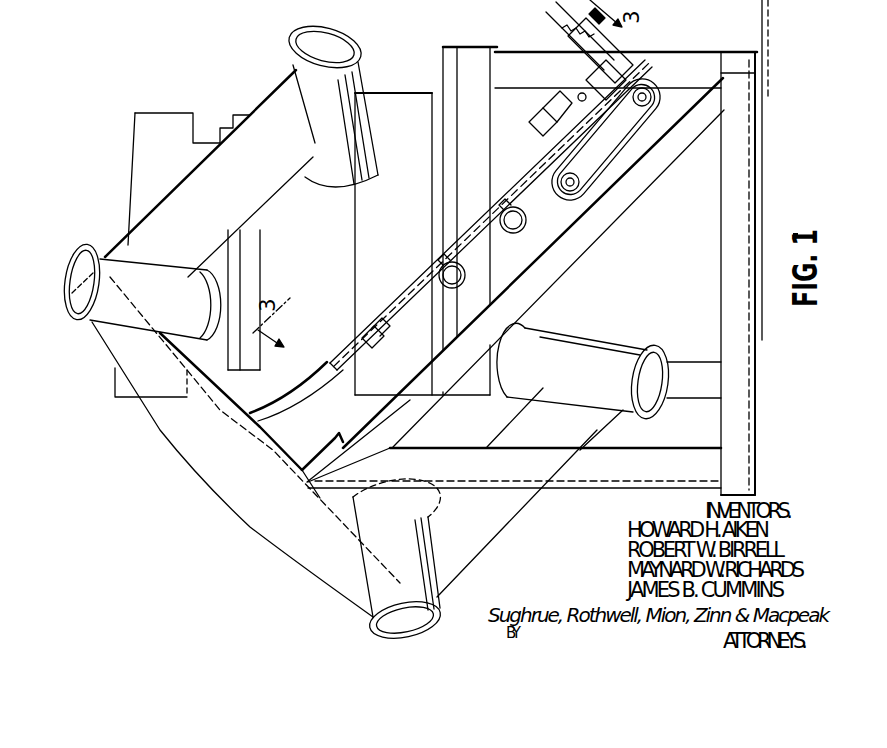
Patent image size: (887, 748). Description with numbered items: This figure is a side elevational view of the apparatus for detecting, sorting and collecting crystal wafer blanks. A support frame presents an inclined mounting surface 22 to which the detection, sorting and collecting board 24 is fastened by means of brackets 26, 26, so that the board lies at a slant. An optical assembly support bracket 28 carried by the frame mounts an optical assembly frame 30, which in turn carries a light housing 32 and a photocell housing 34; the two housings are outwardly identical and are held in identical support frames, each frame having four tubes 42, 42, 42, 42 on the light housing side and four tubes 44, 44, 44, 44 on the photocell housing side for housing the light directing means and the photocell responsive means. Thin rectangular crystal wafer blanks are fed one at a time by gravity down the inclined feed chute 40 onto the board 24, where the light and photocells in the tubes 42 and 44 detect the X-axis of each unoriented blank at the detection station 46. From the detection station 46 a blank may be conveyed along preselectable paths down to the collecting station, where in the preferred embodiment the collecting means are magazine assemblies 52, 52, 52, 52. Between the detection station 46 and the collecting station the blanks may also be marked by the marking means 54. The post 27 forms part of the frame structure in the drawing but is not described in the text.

The inclined mounting surface 22 is at (568, 247).
The detection, sorting and collecting board 24 is at (510, 185).
The brackets 26 is at (627, 150).
The frame post 27 is at (738, 310).
The optical assembly support bracket 28 is at (300, 460).
The optical assembly frame 30 is at (228, 503).
The light housing 32 is at (475, 530).
The photocell housing 34 is at (270, 118).
The inclined feed chute 40 is at (295, 395).
The tubes 42 is at (627, 346).
The tubes 44 is at (297, 52).
The detection station 46 is at (360, 330).
The magazine assemblies 52 is at (550, 15).
The marking means 54 is at (550, 133).